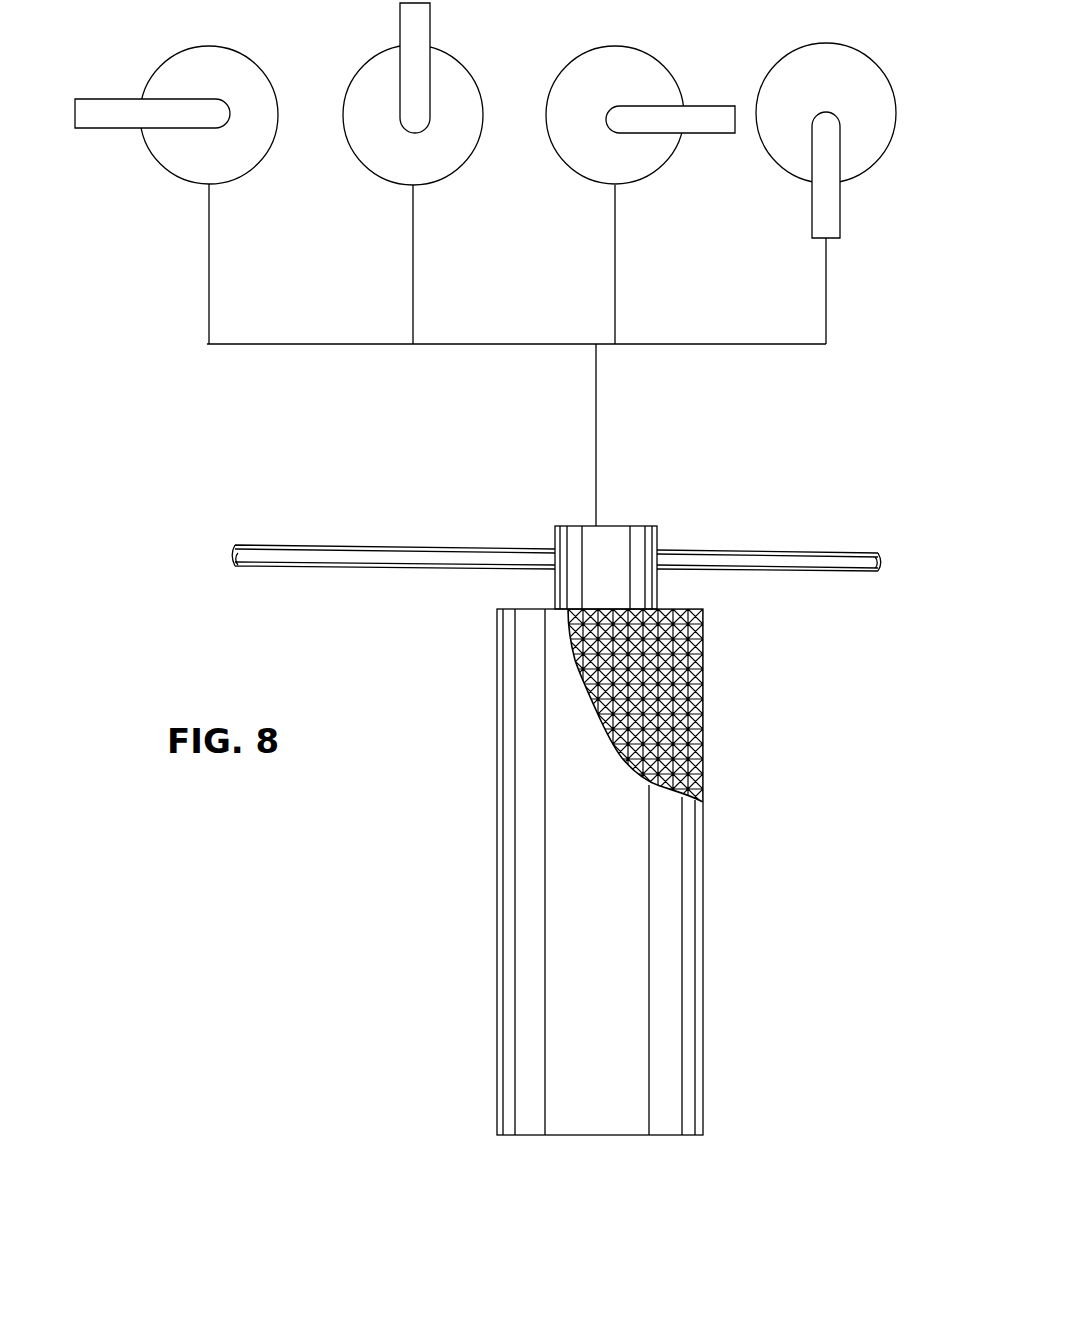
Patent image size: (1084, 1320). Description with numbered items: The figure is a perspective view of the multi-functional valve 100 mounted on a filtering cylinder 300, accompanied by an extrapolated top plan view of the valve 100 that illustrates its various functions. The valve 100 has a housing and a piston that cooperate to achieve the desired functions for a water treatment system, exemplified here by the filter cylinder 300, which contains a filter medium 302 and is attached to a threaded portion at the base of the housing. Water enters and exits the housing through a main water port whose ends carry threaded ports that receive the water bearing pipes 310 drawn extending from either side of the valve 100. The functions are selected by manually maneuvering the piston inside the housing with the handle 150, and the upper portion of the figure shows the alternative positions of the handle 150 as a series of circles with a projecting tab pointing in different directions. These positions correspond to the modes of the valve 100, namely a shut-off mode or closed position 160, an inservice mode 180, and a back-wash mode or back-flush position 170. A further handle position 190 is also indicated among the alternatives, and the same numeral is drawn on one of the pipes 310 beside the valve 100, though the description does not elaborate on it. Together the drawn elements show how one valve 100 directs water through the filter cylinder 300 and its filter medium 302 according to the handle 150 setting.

The multi-functional valve 100 is at (563, 525).
The handle 150 is at (128, 108).
The closed position 160 is at (825, 218).
The back-flush position 170 is at (420, 23).
The inservice mode 180 is at (108, 113).
The knob position indicator 190 is at (705, 118).
The filtering cylinder 300 is at (628, 890).
The filter medium 302 is at (703, 675).
The water bearing pipes 310 is at (787, 562).